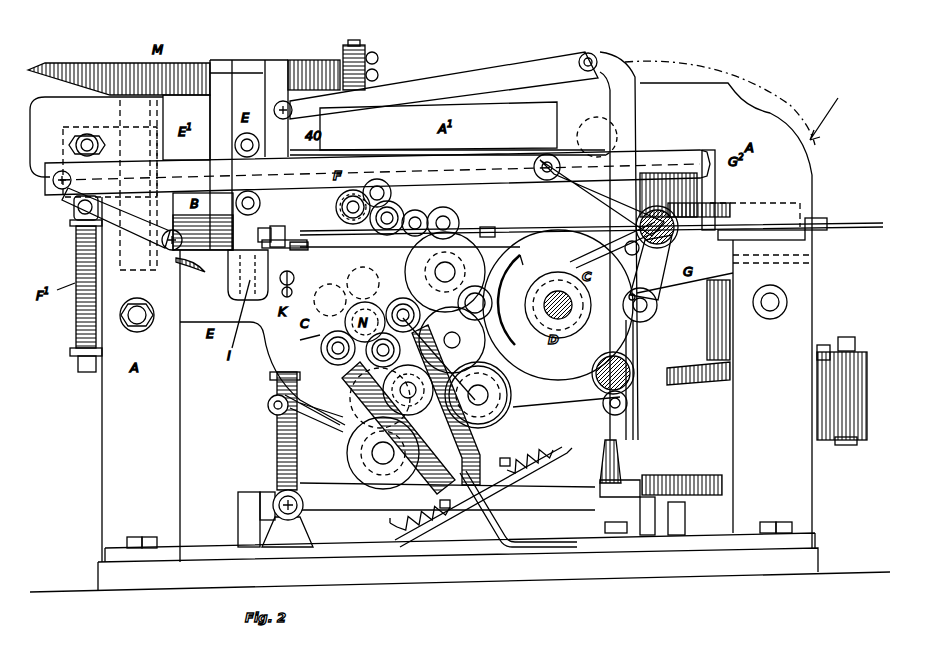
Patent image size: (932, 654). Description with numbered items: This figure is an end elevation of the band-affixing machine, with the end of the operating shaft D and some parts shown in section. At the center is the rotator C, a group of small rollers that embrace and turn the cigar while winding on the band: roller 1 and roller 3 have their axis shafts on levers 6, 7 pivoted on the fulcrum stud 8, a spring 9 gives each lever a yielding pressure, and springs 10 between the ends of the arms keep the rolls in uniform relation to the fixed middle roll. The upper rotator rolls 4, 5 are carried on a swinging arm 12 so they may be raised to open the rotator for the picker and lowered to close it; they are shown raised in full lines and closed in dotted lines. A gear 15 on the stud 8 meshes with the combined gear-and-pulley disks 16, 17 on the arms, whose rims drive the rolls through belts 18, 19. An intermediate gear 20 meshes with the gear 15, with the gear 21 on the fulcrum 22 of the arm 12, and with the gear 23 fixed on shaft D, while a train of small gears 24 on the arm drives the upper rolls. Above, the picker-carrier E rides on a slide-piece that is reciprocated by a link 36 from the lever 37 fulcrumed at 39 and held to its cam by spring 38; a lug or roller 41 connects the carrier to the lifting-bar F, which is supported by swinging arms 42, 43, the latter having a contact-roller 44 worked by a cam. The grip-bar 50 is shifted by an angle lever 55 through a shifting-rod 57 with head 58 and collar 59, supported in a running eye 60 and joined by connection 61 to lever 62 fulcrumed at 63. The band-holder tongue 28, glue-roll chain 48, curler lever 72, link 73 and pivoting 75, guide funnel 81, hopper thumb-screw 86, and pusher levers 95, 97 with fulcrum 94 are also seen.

The roller 1 is at (332, 348).
The roller 3 is at (403, 308).
The rotator roll 4 is at (357, 257).
The rotator roll 5 is at (342, 253).
The lever 6 is at (398, 428).
The lever 7 is at (446, 401).
The fulcrum stud 8 is at (408, 390).
The spring 9 is at (533, 440).
The spring 10 is at (498, 525).
The swinging arm 12 is at (386, 200).
The gear 15 is at (380, 398).
The combined gear-and-pulley disk 16 is at (370, 453).
The combined gear-and-pulley disk 17 is at (512, 393).
The belt 18 is at (338, 400).
The belt 19 is at (478, 389).
The intermediate gear 20 is at (452, 340).
The gear 21 is at (478, 268).
The fulcrum 22 is at (445, 272).
The gear 23 is at (562, 372).
The train of small gears 24 is at (448, 222).
The tongue 28 is at (195, 272).
The link 36 is at (458, 85).
The lever 37 is at (638, 118).
The spring 38 is at (680, 475).
The fulcrum 39 is at (634, 405).
The lug or roller 41 is at (248, 210).
The swinging arm 42 is at (140, 235).
The swinging arm 43 is at (574, 190).
The contact-roller 44 is at (658, 305).
The belt or chain 48 is at (576, 255).
The grip-bar 50 is at (240, 290).
The angle lever 55 is at (302, 248).
The shifting-rod 57 is at (530, 229).
The head 58 is at (276, 230).
The collar 59 is at (488, 227).
The loose running eye 60 is at (705, 230).
The connection 61 is at (780, 240).
The lever 62 is at (636, 343).
The fulcrum 63 is at (630, 380).
The lever 72 is at (277, 447).
The link 73 is at (308, 420).
The pivoting 75 is at (268, 408).
The guide funnel 81 is at (300, 340).
The thumb-screw device 86 is at (372, 65).
The fulcrum 94 is at (846, 338).
The lever 95 is at (870, 353).
The primary lever 97 is at (686, 385).